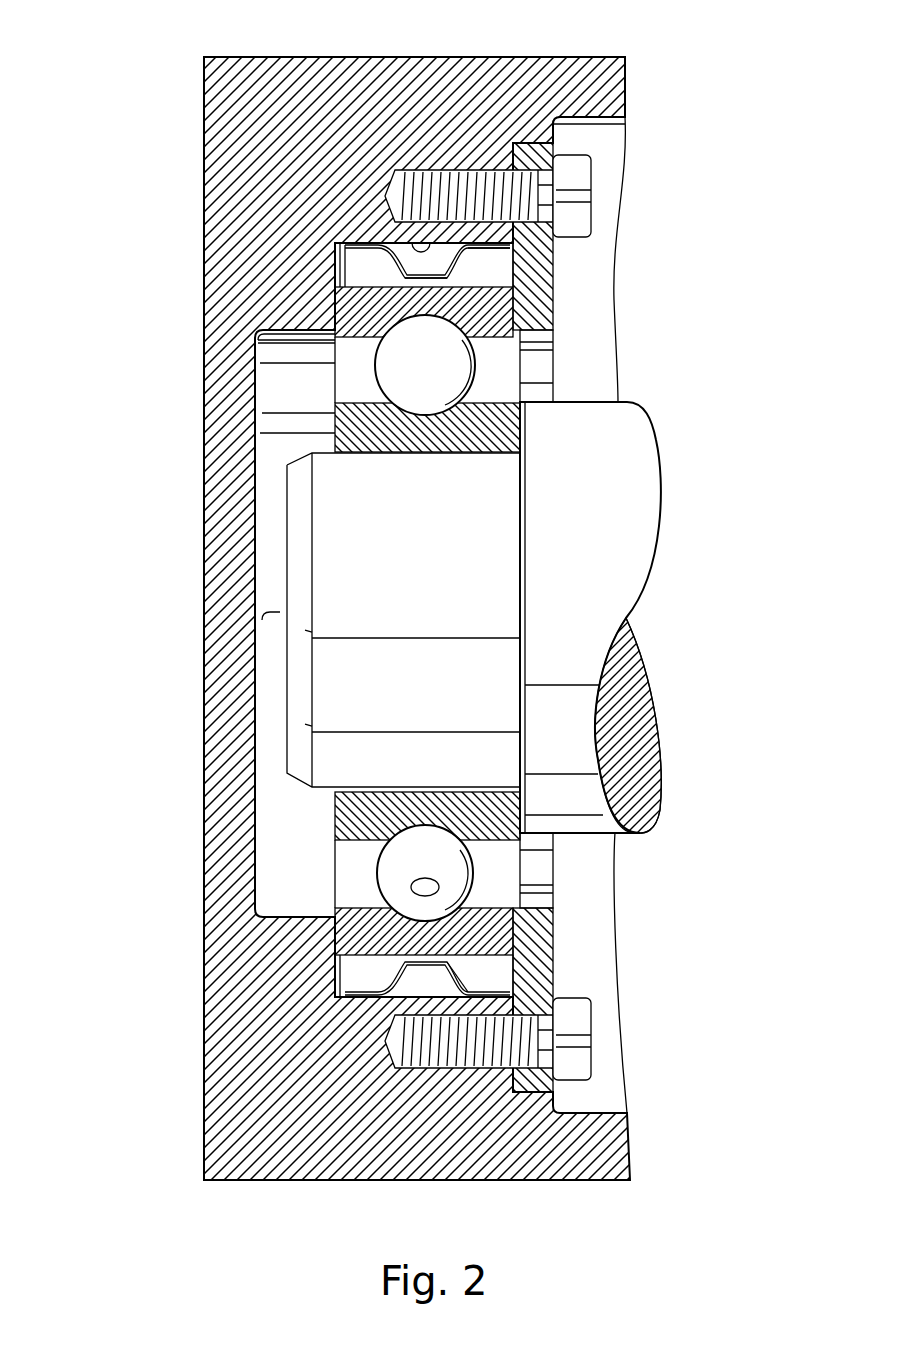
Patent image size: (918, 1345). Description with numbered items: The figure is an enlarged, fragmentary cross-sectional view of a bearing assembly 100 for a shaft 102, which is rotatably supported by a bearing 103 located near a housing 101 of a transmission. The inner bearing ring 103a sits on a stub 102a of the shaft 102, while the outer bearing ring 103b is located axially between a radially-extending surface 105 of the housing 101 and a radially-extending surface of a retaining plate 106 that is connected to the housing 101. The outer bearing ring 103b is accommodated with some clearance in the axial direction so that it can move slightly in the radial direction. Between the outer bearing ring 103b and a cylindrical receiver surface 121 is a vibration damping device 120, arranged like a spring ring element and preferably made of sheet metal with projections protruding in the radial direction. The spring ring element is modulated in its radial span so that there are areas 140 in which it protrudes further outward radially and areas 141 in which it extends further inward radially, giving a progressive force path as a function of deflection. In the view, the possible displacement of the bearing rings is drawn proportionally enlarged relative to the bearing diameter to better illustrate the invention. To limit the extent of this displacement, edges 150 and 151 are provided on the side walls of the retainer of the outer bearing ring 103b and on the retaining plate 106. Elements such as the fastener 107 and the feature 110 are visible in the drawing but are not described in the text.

The bearing assembly 100 is at (712, 104).
The housing 101 is at (222, 124).
The shaft 102 is at (615, 496).
The stub of the shaft 102a is at (352, 460).
The bearing 103 is at (492, 362).
The inner bearing ring 103a is at (337, 433).
The outer bearing ring 103b is at (337, 340).
The radially-extending surface 105 is at (322, 308).
The retaining plate 106 is at (552, 306).
The bolt 107 is at (580, 190).
The spring element 110 is at (422, 247).
The vibration damping device 120 is at (553, 310).
The cylindrical receiver surface 121 is at (492, 1005).
The areas protruding outward 140 is at (357, 243).
The areas extending inward 141 is at (343, 978).
The edge 150 is at (340, 278).
The edge 151 is at (513, 285).